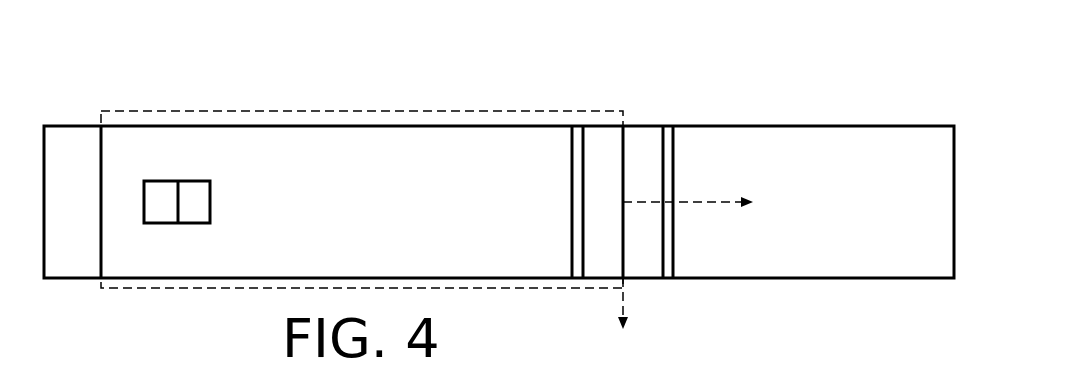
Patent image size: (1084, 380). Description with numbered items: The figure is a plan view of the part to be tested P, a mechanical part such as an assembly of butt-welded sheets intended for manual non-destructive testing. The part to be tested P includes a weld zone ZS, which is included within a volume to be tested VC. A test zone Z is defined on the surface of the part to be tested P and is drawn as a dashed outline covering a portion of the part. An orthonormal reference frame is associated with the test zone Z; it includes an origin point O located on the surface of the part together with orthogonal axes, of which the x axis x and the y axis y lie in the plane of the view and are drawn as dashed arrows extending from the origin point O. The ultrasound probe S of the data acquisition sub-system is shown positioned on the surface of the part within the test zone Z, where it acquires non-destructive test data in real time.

The part to be tested P is at (897, 125).
The test zone Z is at (345, 111).
The weld zone ZS is at (632, 125).
The volume to be tested VC is at (674, 260).
The ultrasound probe S is at (166, 188).
The origin point O is at (674, 255).
The x axis x is at (604, 336).
The y axis y is at (765, 204).